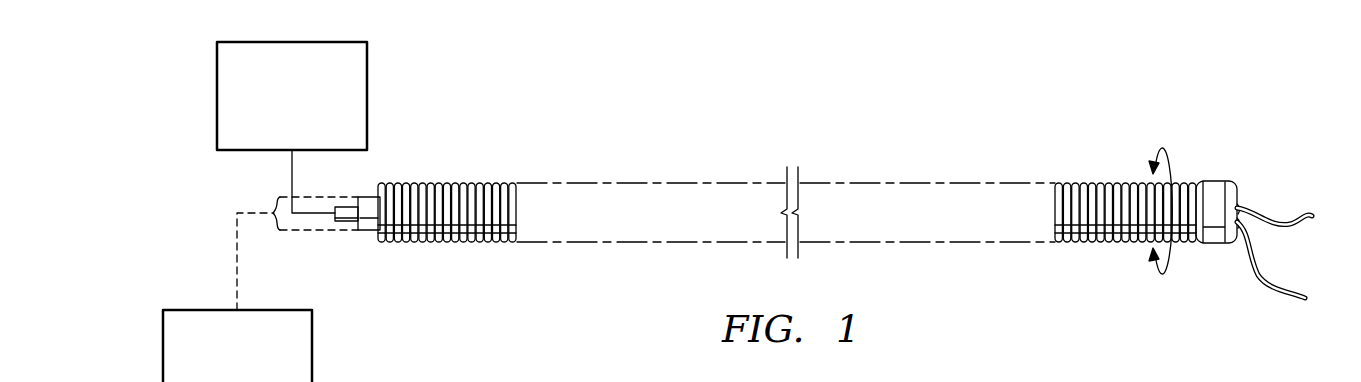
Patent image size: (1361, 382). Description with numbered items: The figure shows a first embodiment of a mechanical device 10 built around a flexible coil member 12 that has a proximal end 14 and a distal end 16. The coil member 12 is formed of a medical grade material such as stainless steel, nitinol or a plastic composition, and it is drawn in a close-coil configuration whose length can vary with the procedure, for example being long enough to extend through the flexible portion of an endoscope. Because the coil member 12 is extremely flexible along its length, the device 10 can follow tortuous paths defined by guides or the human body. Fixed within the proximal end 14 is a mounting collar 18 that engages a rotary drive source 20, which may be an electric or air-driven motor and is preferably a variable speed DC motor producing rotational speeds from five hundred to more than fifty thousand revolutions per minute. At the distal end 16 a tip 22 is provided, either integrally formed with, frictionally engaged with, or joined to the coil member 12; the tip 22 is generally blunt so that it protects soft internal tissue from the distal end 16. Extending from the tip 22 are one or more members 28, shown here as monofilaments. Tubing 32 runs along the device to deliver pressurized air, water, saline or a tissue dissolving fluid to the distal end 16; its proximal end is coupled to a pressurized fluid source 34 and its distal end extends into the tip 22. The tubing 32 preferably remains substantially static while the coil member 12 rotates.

The mechanical device 10 is at (912, 139).
The flexible coil member 12 is at (645, 183).
The proximal end 14 is at (426, 257).
The distal end 16 is at (1177, 141).
The mounting collar 18 is at (370, 231).
The rotary drive source 20 is at (163, 357).
The tip 22 is at (1218, 181).
The members 28 is at (1304, 212).
The tubing 32 is at (347, 223).
The pressurized fluid source 34 is at (217, 92).